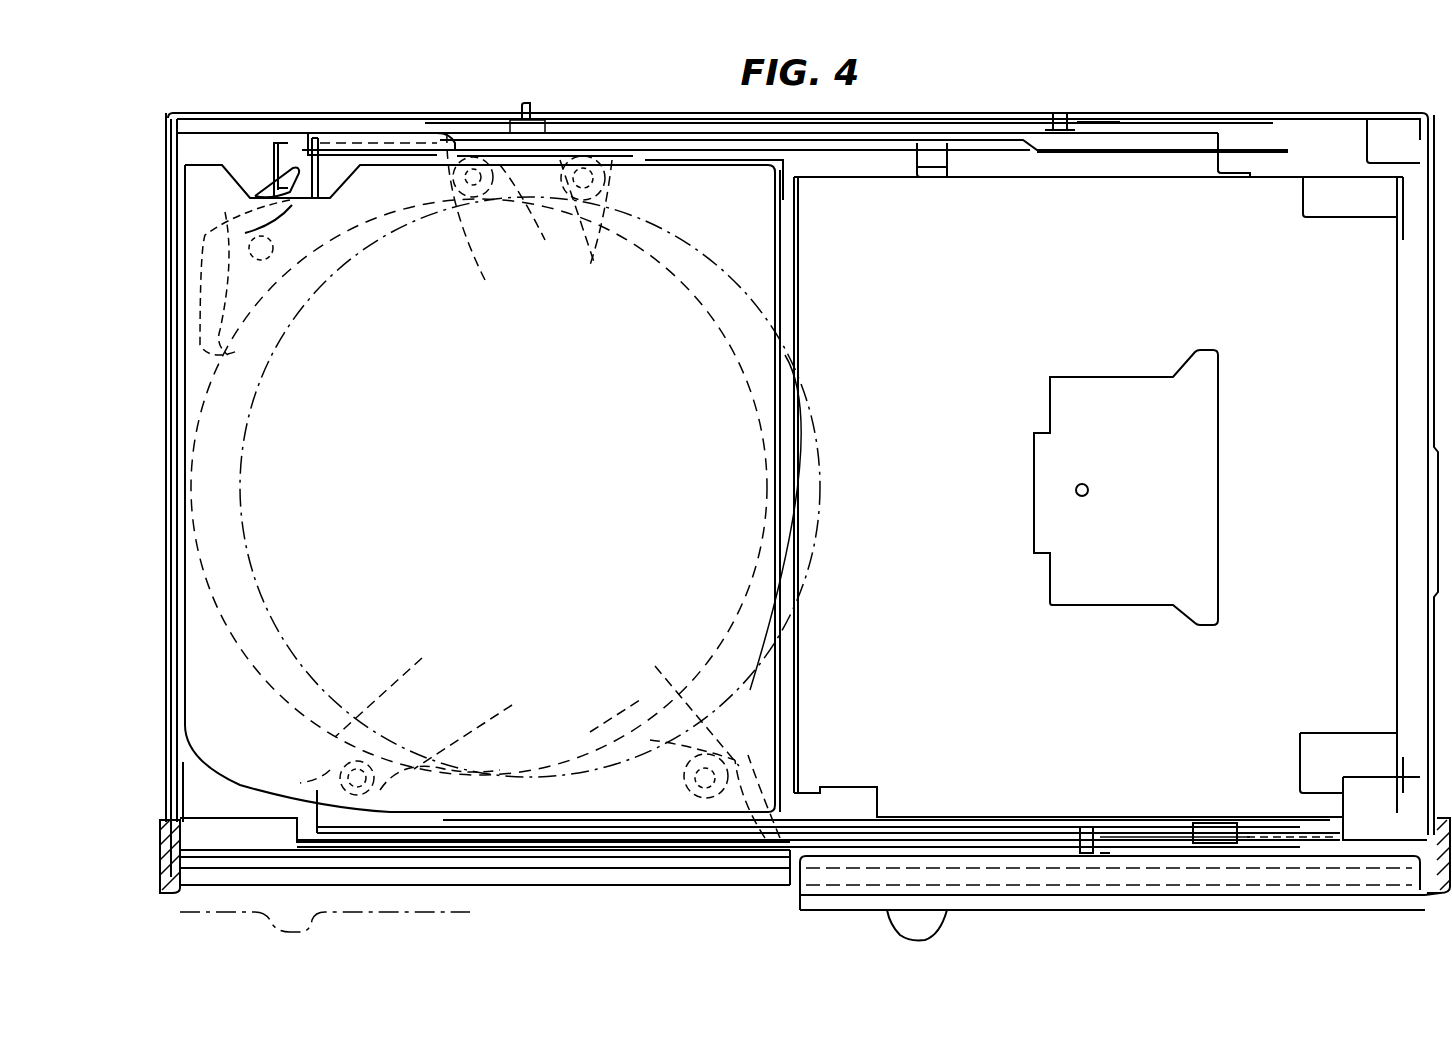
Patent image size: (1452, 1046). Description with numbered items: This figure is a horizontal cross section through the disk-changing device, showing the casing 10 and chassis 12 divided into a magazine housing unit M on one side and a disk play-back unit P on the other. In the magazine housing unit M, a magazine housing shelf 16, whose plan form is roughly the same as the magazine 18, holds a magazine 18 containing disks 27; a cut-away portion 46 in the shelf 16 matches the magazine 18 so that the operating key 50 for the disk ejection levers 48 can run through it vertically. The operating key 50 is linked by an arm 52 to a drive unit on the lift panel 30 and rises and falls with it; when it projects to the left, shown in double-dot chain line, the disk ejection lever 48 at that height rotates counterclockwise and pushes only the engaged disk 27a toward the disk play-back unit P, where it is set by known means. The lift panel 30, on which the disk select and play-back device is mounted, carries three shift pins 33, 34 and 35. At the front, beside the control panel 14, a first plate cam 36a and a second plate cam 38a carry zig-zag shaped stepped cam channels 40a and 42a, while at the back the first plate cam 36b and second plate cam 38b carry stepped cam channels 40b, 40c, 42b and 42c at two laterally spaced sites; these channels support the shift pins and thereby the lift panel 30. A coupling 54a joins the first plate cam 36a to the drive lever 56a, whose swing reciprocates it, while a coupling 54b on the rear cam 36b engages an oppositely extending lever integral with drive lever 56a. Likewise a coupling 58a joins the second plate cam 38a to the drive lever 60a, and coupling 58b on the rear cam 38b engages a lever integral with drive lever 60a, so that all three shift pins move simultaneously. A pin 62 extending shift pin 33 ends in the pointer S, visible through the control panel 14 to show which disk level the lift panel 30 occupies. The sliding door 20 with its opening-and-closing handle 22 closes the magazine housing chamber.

The casing 10 is at (163, 432).
The chassis 12 is at (523, 847).
The control panel 14 is at (1345, 883).
The magazine housing shelves 16 is at (200, 760).
The magazine 18 is at (213, 690).
The sliding door 20 is at (860, 915).
The opening-and-closing handle 22 is at (913, 935).
The disk 27 is at (213, 608).
The disk 27a is at (815, 430).
The lift panel 30 is at (1200, 278).
The shift pin 33 is at (1100, 837).
The shift pin 34 is at (1058, 112).
The shift pin 35 is at (533, 96).
The first plate cam 36a is at (703, 833).
The first plate cam 36b is at (697, 123).
The second plate cam 38a is at (657, 827).
The second plate cam 38b is at (675, 118).
The zig-zag shaped stepped cam channel 40a is at (1007, 840).
The zig-zag shaped stepped cam channel 40b is at (1040, 113).
The zig-zag shaped stepped cam channel 40c is at (478, 125).
The zig-zag shaped stepped cam channel 42a is at (1055, 840).
The zig-zag shaped stepped cam channel 42b is at (1097, 117).
The zig-zag shaped stepped cam channel 42c is at (557, 118).
The cut-away portion 46 is at (246, 277).
The disk ejection lever 48 is at (253, 197).
The operating key 50 is at (315, 163).
The arm 52 is at (445, 135).
The coupling 54a is at (770, 840).
The coupling 54b is at (630, 118).
The drive lever 56a is at (664, 736).
The coupling 58a is at (267, 782).
The coupling 58b is at (363, 130).
The drive lever 60a is at (413, 777).
The pin 62 is at (1117, 883).
The pointer S is at (1090, 873).
The magazine housing unit M is at (323, 595).
The disk play-back unit P is at (896, 701).